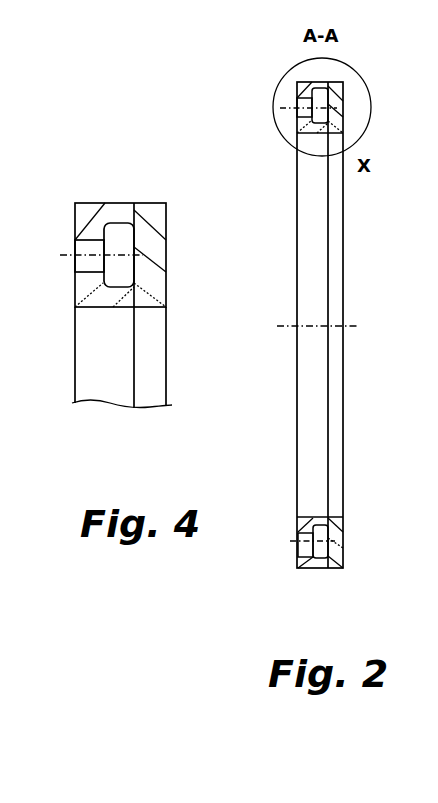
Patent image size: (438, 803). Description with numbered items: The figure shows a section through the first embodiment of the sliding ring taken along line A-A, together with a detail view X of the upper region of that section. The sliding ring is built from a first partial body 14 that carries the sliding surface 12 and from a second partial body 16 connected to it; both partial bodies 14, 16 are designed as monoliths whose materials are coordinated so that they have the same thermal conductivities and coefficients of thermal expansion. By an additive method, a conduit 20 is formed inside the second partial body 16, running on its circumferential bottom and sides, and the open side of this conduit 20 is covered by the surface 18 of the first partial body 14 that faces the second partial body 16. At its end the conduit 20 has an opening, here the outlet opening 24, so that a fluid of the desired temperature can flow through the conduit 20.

In FIG. 4, the sliding surface 12 is at (155, 387).
In FIG. 2, the sliding surface 12 is at (345, 527).
In FIG. 2, the first partial body 14 is at (342, 572).
In FIG. 4, the second partial body 16 is at (105, 388).
In FIG. 2, the second partial body 16 is at (302, 572).
In FIG. 4, the surface of the first partial body 18 is at (137, 211).
In FIG. 2, the surface of the first partial body 18 is at (340, 87).
In FIG. 4, the conduit 20 is at (125, 273).
In FIG. 2, the conduit 20 is at (318, 115).
In FIG. 4, the outlet opening 24 is at (92, 250).
In FIG. 2, the outlet opening 24 is at (300, 105).